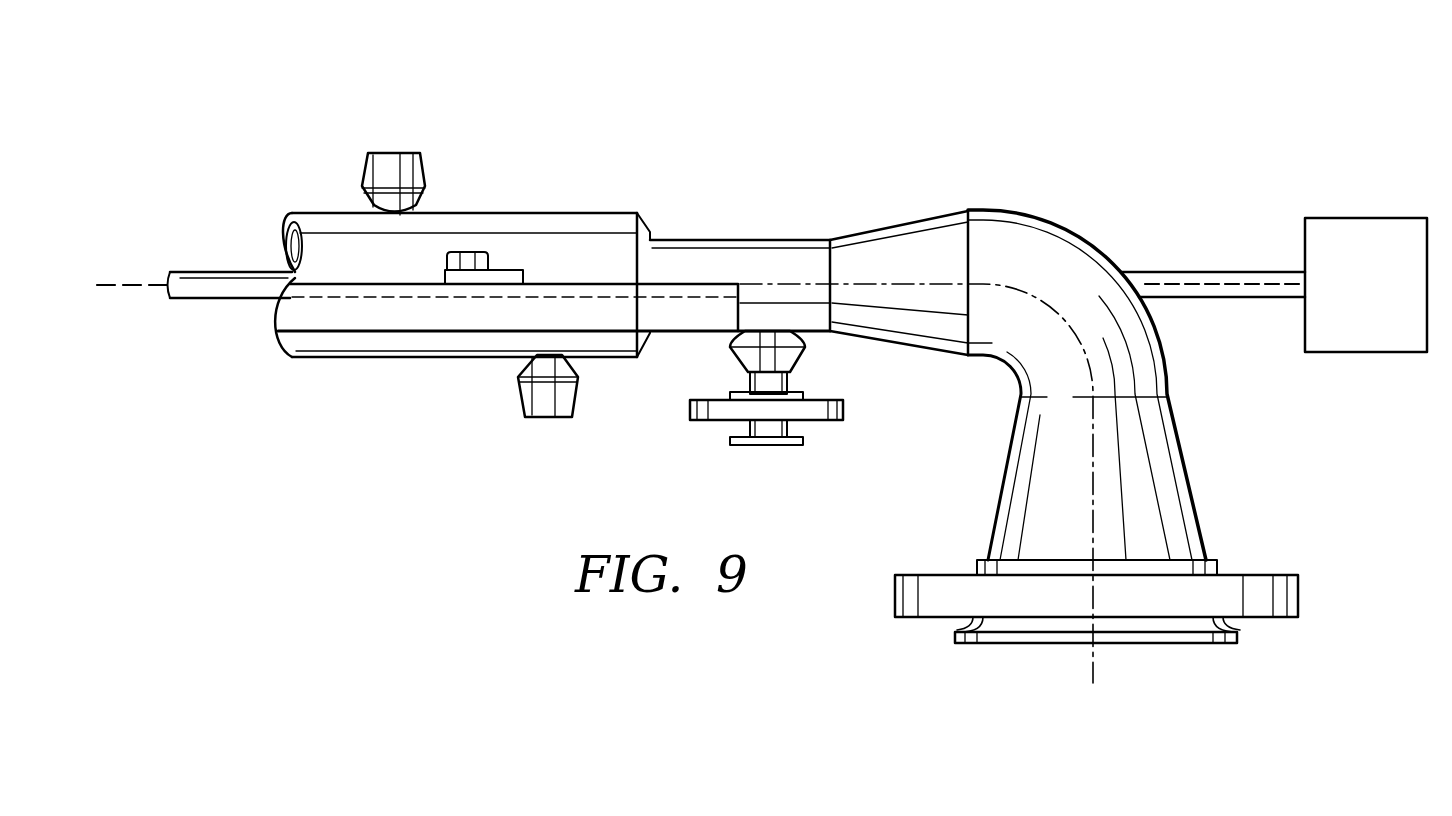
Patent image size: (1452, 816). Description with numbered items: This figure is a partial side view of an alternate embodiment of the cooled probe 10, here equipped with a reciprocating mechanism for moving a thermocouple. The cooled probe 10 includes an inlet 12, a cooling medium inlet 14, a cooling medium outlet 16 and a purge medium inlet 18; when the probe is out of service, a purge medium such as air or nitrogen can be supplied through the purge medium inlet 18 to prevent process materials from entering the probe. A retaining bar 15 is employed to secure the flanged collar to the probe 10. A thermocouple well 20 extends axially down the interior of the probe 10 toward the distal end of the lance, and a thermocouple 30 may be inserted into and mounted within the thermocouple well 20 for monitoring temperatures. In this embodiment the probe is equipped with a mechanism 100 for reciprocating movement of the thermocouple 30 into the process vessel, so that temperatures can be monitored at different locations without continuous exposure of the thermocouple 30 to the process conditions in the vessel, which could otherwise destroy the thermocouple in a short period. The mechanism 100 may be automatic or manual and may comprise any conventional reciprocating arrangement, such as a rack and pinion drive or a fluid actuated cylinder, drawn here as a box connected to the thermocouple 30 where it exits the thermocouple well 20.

The cooled probe 10 is at (971, 104).
The inlet 12 is at (1163, 645).
The cooling medium inlet 14 is at (557, 418).
The retaining bar 15 is at (378, 331).
The cooling medium outlet 16 is at (404, 153).
The purge medium inlet 18 is at (770, 445).
The thermocouple well 20 is at (238, 272).
The thermocouple 30 is at (133, 281).
The mechanism 100 is at (1342, 301).